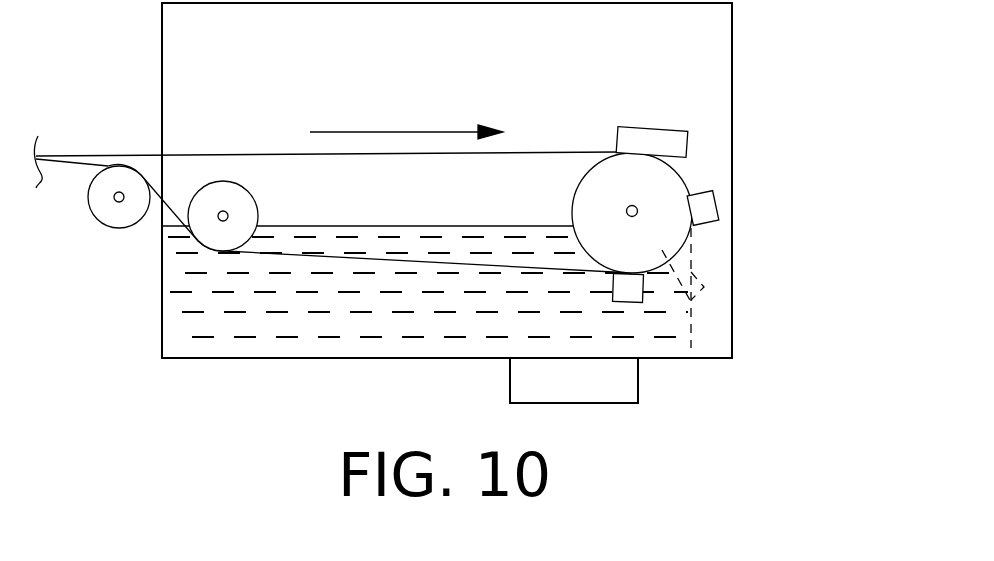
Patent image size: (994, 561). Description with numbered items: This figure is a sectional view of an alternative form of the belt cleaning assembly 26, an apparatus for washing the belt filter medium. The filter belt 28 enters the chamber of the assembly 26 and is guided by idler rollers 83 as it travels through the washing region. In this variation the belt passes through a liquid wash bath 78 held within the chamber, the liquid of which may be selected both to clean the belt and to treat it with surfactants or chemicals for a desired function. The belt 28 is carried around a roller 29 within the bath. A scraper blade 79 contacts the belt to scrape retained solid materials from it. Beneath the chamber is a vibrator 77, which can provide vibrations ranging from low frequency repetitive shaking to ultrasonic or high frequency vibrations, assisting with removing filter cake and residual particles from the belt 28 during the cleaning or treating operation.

The belt washing assembly 26 is at (732, 52).
The filter belt 28 is at (193, 155).
The applicator roller 29 is at (600, 172).
The idler rollers 83 is at (101, 208).
The liquid wash bath 78 is at (362, 324).
The vibrator 77 is at (596, 397).
The scraper 79 is at (691, 286).